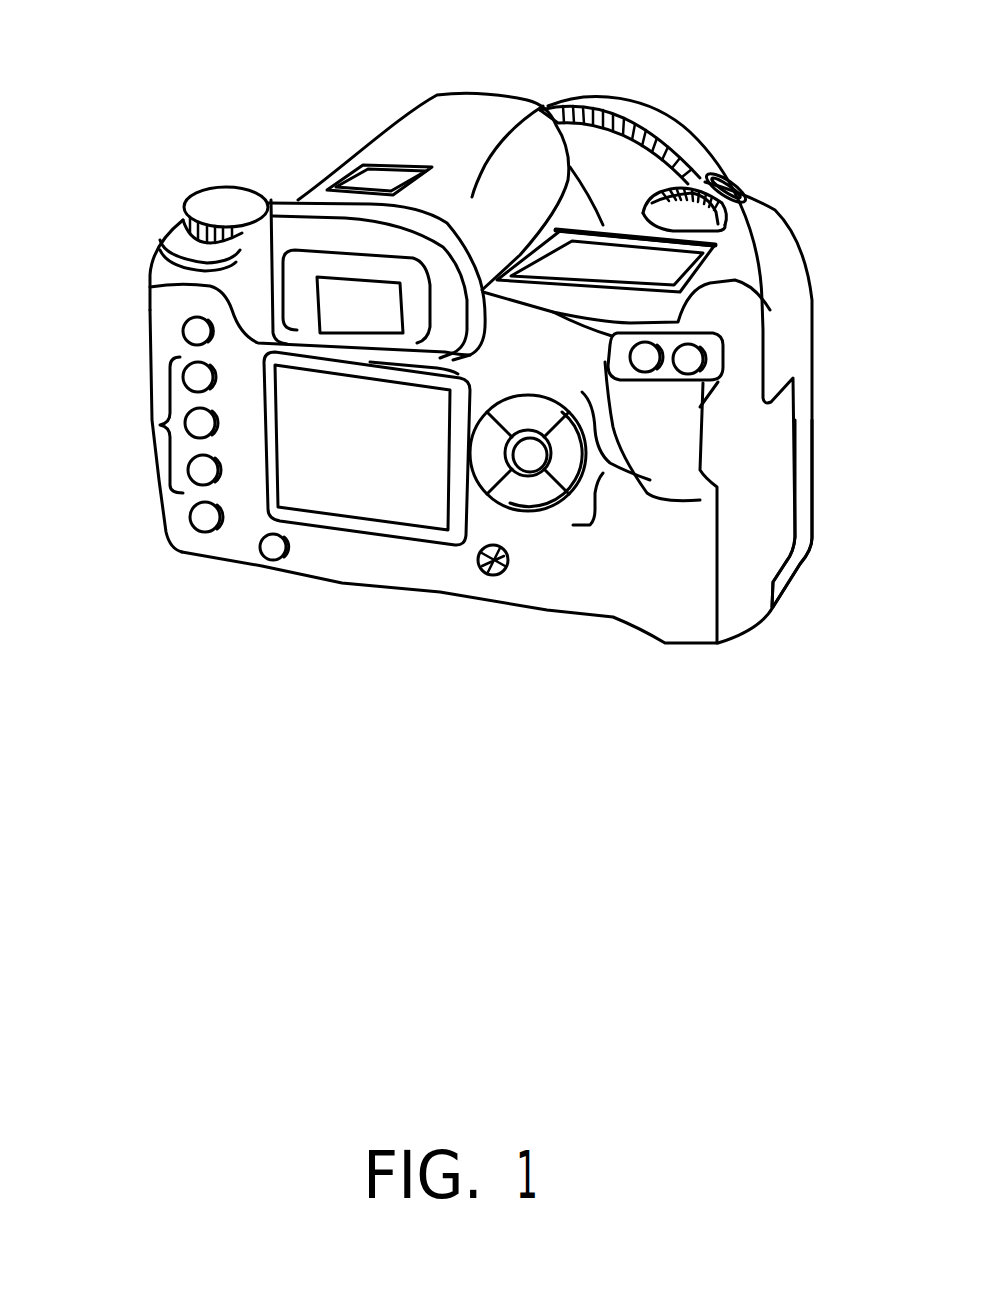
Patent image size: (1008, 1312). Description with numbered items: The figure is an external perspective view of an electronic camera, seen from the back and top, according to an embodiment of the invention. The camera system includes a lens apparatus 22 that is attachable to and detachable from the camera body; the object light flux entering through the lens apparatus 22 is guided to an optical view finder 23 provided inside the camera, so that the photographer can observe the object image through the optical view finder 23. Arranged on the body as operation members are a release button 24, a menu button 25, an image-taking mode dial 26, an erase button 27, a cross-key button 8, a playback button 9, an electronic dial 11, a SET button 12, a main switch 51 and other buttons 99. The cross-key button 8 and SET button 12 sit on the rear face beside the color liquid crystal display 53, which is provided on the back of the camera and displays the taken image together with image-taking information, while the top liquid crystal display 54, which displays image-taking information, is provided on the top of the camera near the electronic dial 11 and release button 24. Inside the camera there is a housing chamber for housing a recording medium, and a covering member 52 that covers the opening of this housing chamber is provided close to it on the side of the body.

The cross-key button 8 is at (717, 493).
The playback button 9 is at (205, 517).
The electronic dial 11 is at (687, 175).
The SET button 12 is at (528, 468).
The lens apparatus 22 is at (630, 103).
The optical view finder 23 is at (340, 287).
The release button 24 is at (730, 183).
The menu button 25 is at (190, 327).
The image-taking mode dial 26 is at (217, 207).
The erase button 27 is at (273, 547).
The main switch 51 is at (493, 576).
The covering member 52 is at (770, 552).
The color liquid crystal display 53 is at (340, 487).
The top liquid crystal display 54 is at (752, 242).
The other buttons 99 is at (170, 427).